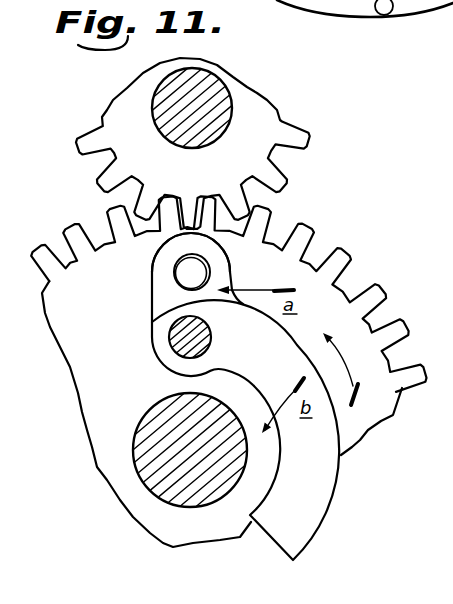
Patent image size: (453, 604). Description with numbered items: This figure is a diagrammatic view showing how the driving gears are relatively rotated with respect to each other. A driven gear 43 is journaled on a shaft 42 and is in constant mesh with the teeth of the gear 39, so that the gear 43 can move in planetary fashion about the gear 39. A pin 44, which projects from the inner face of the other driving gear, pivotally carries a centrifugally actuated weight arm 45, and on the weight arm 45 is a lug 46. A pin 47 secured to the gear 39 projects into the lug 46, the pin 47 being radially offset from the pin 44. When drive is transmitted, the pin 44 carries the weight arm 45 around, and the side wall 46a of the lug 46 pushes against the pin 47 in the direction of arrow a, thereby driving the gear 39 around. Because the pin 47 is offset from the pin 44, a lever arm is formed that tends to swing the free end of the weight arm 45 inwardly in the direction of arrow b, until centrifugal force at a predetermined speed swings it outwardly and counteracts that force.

The gear 39 is at (347, 281).
The shaft 42 is at (212, 80).
The gear 43 is at (273, 127).
The pin 44 is at (168, 342).
The weight arm 45 is at (316, 475).
The lug 46 is at (157, 297).
The side wall of the lug 46a is at (211, 270).
The pin 47 is at (176, 271).